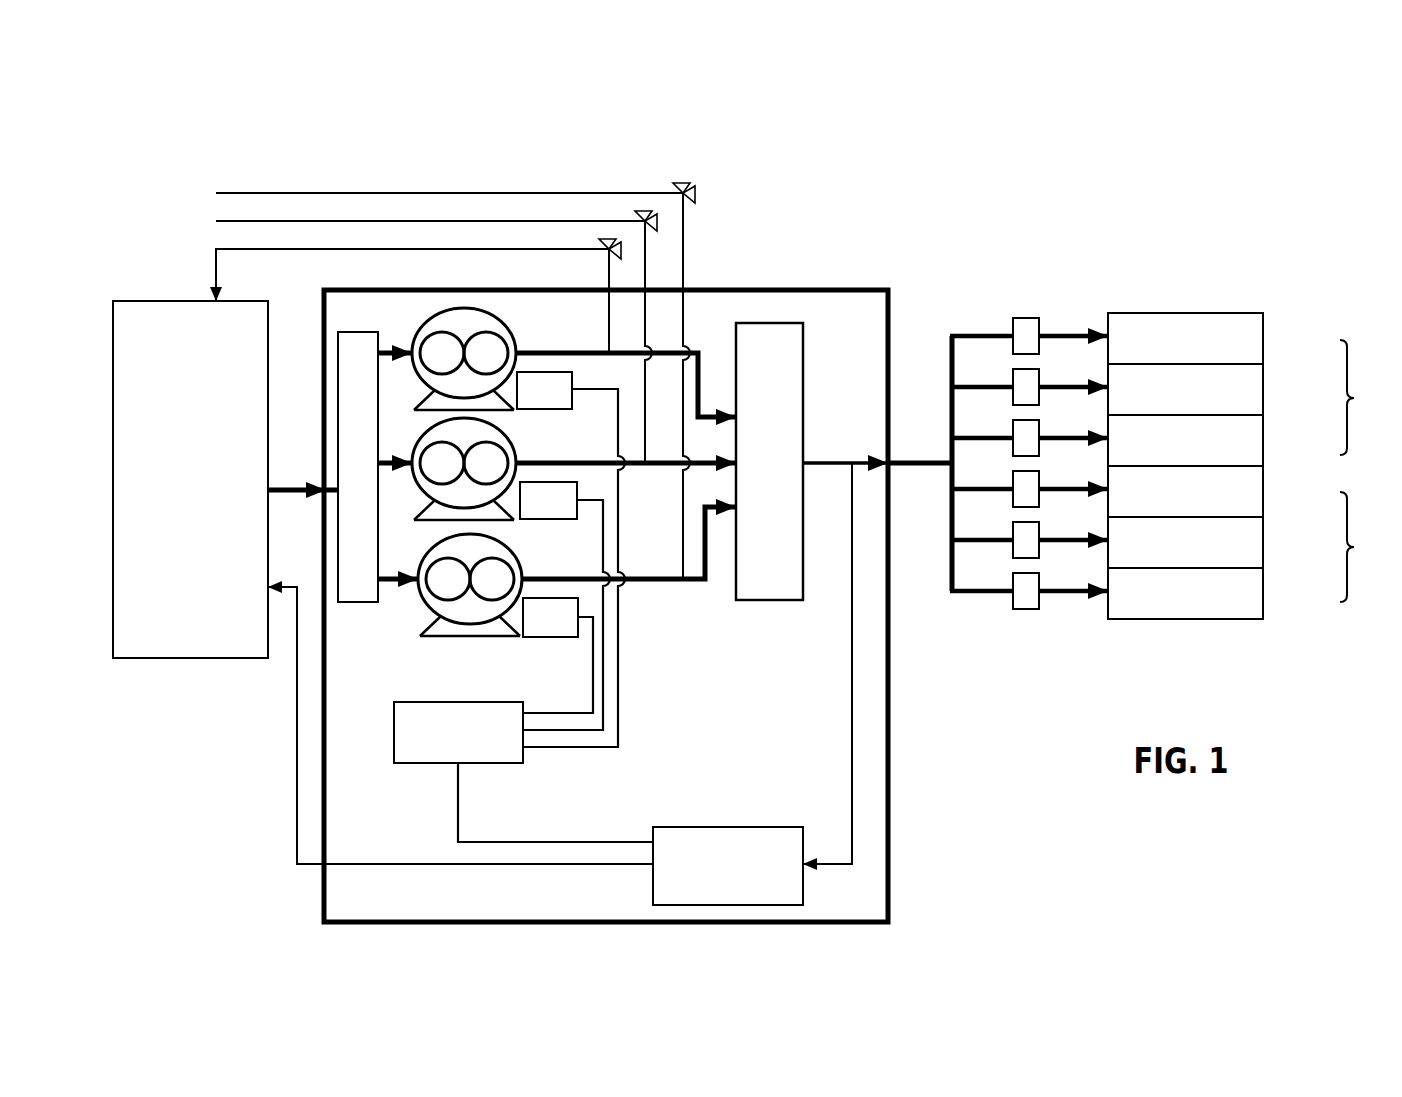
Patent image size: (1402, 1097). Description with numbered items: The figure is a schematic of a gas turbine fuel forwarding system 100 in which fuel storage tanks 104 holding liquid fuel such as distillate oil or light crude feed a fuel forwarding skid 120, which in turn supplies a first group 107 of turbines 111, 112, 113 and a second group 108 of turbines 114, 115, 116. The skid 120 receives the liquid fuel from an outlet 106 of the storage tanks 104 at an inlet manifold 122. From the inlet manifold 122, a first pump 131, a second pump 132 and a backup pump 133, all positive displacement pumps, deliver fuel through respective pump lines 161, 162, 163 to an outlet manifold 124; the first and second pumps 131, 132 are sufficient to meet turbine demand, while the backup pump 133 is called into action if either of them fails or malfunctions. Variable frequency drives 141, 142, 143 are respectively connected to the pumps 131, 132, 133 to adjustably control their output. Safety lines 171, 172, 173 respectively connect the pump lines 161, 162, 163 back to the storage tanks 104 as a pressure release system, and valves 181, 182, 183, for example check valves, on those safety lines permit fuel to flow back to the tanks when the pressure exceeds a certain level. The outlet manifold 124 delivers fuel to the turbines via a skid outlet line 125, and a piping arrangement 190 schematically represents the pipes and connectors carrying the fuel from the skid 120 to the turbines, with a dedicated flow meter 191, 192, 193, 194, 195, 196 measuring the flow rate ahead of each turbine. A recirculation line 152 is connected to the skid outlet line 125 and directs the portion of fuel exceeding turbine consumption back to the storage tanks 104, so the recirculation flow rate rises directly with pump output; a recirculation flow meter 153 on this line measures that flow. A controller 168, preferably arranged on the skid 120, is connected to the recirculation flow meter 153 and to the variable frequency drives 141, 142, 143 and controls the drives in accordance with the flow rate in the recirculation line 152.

The gas turbine fuel forwarding system 100 is at (1097, 142).
The fuel storage tanks 104 is at (134, 300).
The outlet 106 is at (294, 488).
The first group of turbines 107 is at (1371, 397).
The second group of turbines 108 is at (1371, 547).
The turbine 111 is at (1264, 343).
The turbine 112 is at (1264, 388).
The turbine 113 is at (1264, 437).
The turbine 114 is at (1264, 490).
The turbine 115 is at (1264, 540).
The turbine 116 is at (1264, 585).
The fuel forwarding skid 120 is at (782, 282).
The inlet manifold 122 is at (358, 336).
The outlet manifold 124 is at (803, 345).
The skid outlet line 125 is at (826, 462).
The first pump 131 is at (498, 330).
The second pump 132 is at (428, 488).
The backup pump 133 is at (425, 597).
The variable frequency drive 141 is at (547, 409).
The variable frequency drive 142 is at (545, 520).
The variable frequency drive 143 is at (548, 637).
The recirculation line 152 is at (850, 628).
The recirculation flow meter 153 is at (716, 826).
The pump line 161 is at (585, 350).
The pump line 162 is at (590, 460).
The pump line 163 is at (578, 574).
The controller 168 is at (484, 763).
The safety line 171 is at (285, 250).
The safety line 172 is at (300, 220).
The safety line 173 is at (435, 192).
The valve 181 is at (603, 238).
The valve 182 is at (644, 209).
The valve 183 is at (698, 193).
The piping arrangement 190 is at (1009, 243).
The flow meter 191 is at (1025, 325).
The flow meter 192 is at (1020, 380).
The flow meter 193 is at (1020, 432).
The flow meter 194 is at (1020, 485).
The flow meter 195 is at (1020, 536).
The flow meter 196 is at (1027, 603).